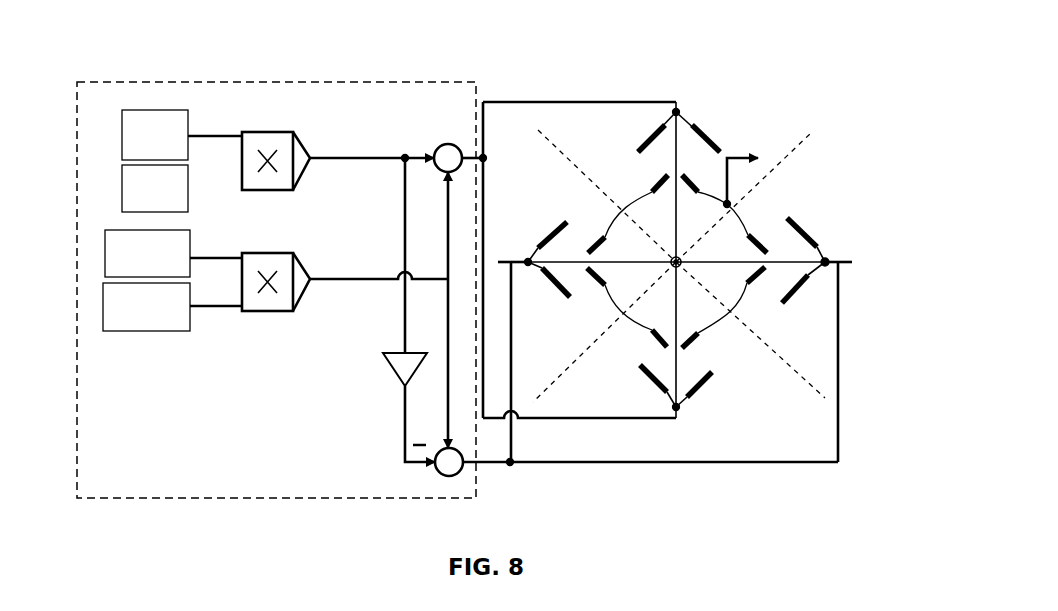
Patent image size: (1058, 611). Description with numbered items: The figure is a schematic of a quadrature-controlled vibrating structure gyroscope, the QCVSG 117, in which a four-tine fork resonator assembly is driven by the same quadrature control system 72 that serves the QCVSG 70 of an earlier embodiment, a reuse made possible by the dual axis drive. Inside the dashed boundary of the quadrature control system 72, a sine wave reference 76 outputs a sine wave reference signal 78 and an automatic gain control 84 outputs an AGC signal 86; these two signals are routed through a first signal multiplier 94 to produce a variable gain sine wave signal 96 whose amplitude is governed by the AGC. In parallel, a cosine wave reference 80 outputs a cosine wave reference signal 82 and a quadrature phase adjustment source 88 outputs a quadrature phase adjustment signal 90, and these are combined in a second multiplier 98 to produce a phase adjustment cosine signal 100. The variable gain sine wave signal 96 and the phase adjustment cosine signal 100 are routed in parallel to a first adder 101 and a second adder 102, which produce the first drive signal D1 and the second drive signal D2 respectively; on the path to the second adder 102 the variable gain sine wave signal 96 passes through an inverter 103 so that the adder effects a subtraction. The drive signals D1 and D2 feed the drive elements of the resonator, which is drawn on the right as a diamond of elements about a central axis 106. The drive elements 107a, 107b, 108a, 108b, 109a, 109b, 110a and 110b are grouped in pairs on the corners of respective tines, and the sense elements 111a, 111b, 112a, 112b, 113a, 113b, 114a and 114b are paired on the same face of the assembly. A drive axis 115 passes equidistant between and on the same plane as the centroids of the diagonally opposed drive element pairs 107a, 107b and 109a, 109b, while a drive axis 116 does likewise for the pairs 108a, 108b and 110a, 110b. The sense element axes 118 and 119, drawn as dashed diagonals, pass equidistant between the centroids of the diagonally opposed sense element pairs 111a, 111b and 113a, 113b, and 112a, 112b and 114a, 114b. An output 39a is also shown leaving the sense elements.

The quadrature-controlled vibrating structure gyroscope 70 is at (186, 46).
The quadrature control system 72 is at (313, 80).
The sine wave reference 76 is at (122, 147).
The sine wave reference signal 78 is at (207, 136).
The cosine wave reference 80 is at (105, 248).
The cosine wave reference signal 82 is at (232, 238).
The automatic gain control 84 is at (122, 192).
The AGC signal 86 is at (212, 183).
The quadrature phase adjustment source 88 is at (122, 331).
The quadrature phase adjustment signal 90 is at (215, 306).
The first signal multiplier 94 is at (302, 178).
The variable gain sine wave signal 96 is at (328, 158).
The second multiplier 98 is at (302, 300).
The phase adjustment cosine signal 100 is at (340, 279).
The first adder 101 is at (444, 144).
The second adder 102 is at (440, 476).
The inverter 103 is at (393, 366).
The first drive signal D1 is at (466, 102).
The second drive signal D2 is at (505, 466).
The central axis 106 is at (672, 256).
The drive element 107a is at (803, 228).
The drive element 107b is at (796, 297).
The drive element 108a is at (696, 390).
The drive element 108b is at (645, 378).
The drive element 109a is at (560, 291).
The drive element 109b is at (550, 236).
The drive element 110a is at (650, 135).
The drive element 110b is at (705, 130).
The sense element 111a is at (760, 286).
The sense element 111b is at (690, 344).
The sense element 112a is at (660, 345).
The sense element 112b is at (592, 277).
The sense element 113a is at (598, 246).
The sense element 113b is at (661, 178).
The sense element 114a is at (700, 172).
The sense element 114b is at (762, 248).
The drive axis 115 is at (850, 262).
The drive axis 116 is at (676, 102).
The QCVSG 117 is at (730, 68).
The sense element axis 118 is at (543, 140).
The sense element axis 119 is at (812, 132).
The output signal 39a is at (756, 170).